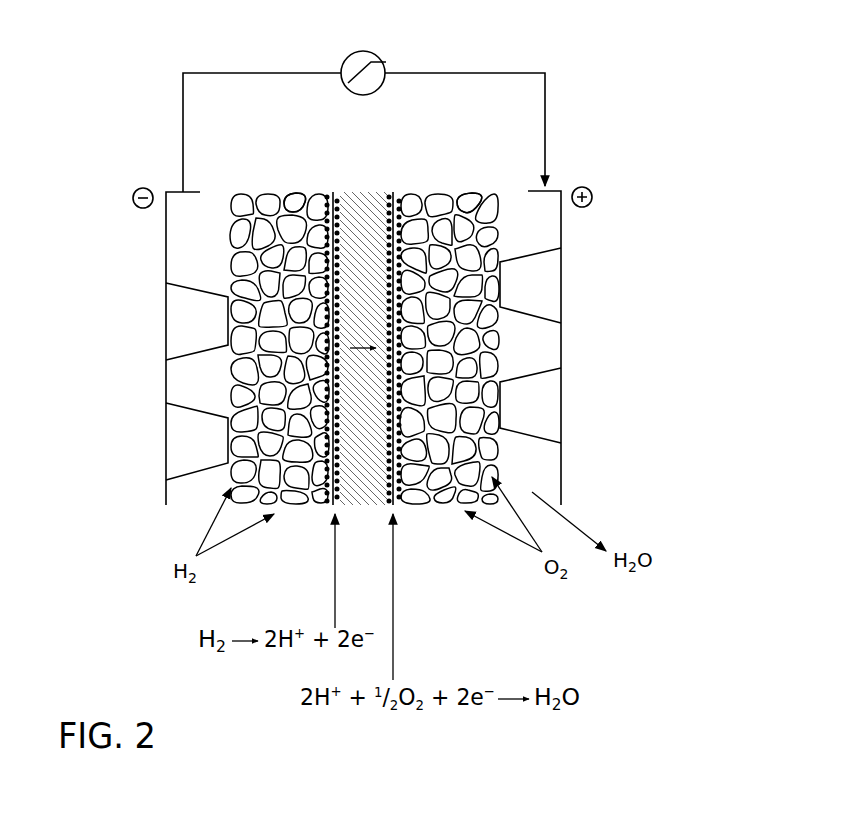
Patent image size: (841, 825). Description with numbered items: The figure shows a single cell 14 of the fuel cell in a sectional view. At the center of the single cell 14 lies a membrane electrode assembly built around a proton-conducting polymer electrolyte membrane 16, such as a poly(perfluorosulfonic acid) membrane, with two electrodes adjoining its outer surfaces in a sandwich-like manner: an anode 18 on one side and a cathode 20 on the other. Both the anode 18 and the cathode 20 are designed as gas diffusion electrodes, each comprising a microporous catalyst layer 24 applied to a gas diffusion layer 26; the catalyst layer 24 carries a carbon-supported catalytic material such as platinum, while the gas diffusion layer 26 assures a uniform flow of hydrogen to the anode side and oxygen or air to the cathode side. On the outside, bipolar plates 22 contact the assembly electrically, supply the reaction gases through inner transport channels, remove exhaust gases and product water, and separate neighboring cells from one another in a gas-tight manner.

The single cell 14 is at (610, 82).
The polymer electrolyte membrane 16 is at (361, 201).
The anode 18 is at (230, 542).
The cathode 20 is at (500, 542).
The bipolar plates 22 is at (166, 331).
The catalyst layer 24 is at (331, 192).
The gas diffusion layer 26 is at (286, 202).